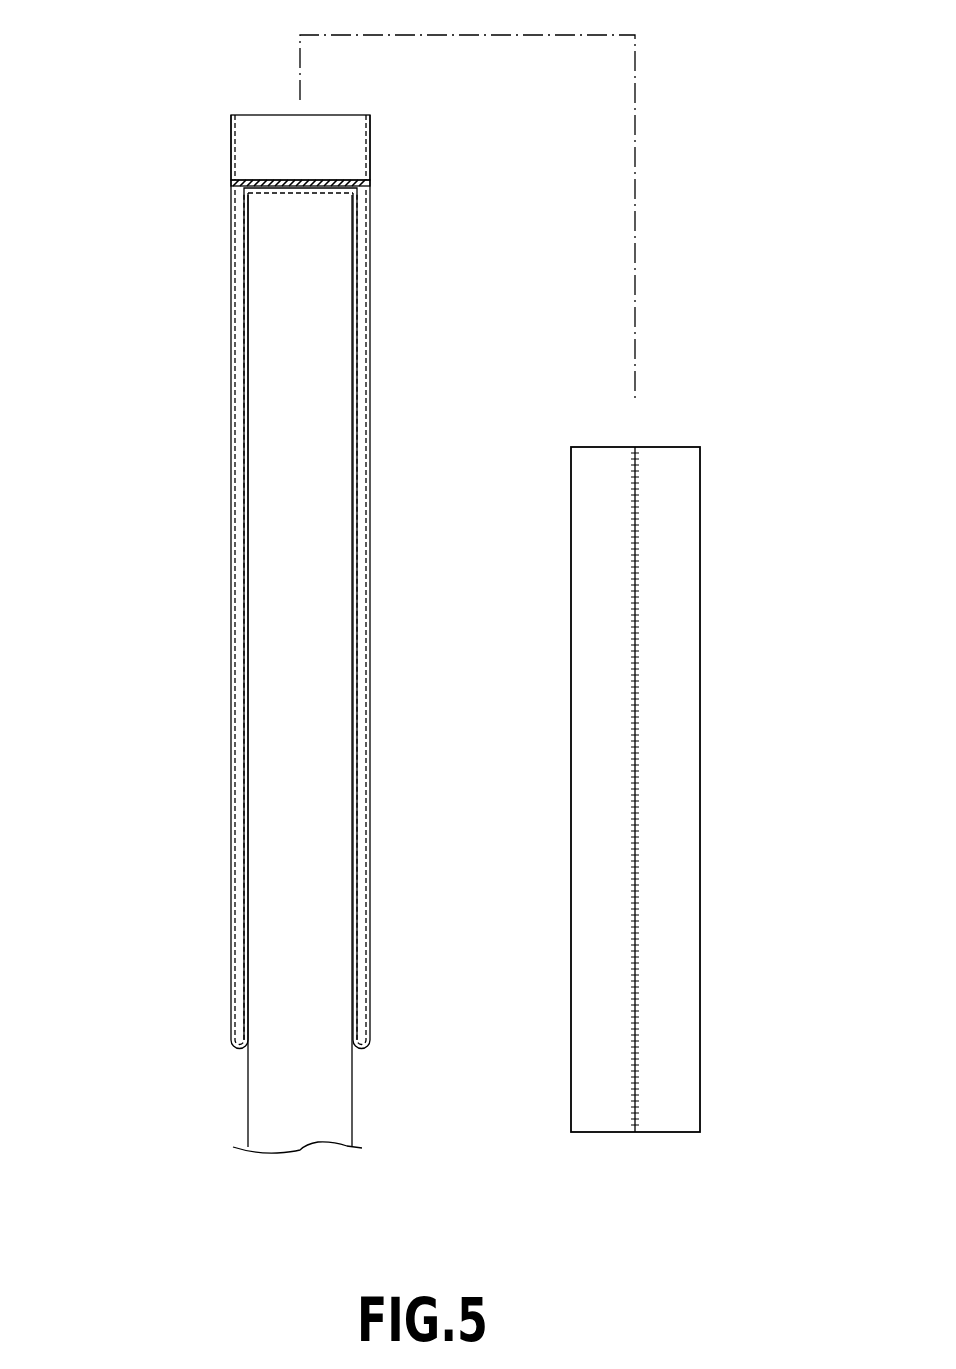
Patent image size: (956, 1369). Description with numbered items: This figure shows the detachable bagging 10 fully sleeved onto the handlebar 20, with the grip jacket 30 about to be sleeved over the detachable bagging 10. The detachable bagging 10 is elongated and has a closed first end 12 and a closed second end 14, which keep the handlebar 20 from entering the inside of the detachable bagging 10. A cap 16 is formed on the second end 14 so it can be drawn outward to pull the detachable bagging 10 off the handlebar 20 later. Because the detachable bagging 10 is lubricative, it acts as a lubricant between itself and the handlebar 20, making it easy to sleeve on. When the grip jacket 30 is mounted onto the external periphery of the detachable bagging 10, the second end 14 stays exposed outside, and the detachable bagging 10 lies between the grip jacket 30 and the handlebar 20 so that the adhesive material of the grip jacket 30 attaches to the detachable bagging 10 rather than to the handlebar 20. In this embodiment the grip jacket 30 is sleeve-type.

The detachable bagging 10 is at (218, 368).
The first end 12 is at (245, 191).
The second end 14 is at (270, 180).
The cap 16 is at (273, 115).
The handlebar 20 is at (247, 1078).
The grip jacket 30 is at (700, 630).